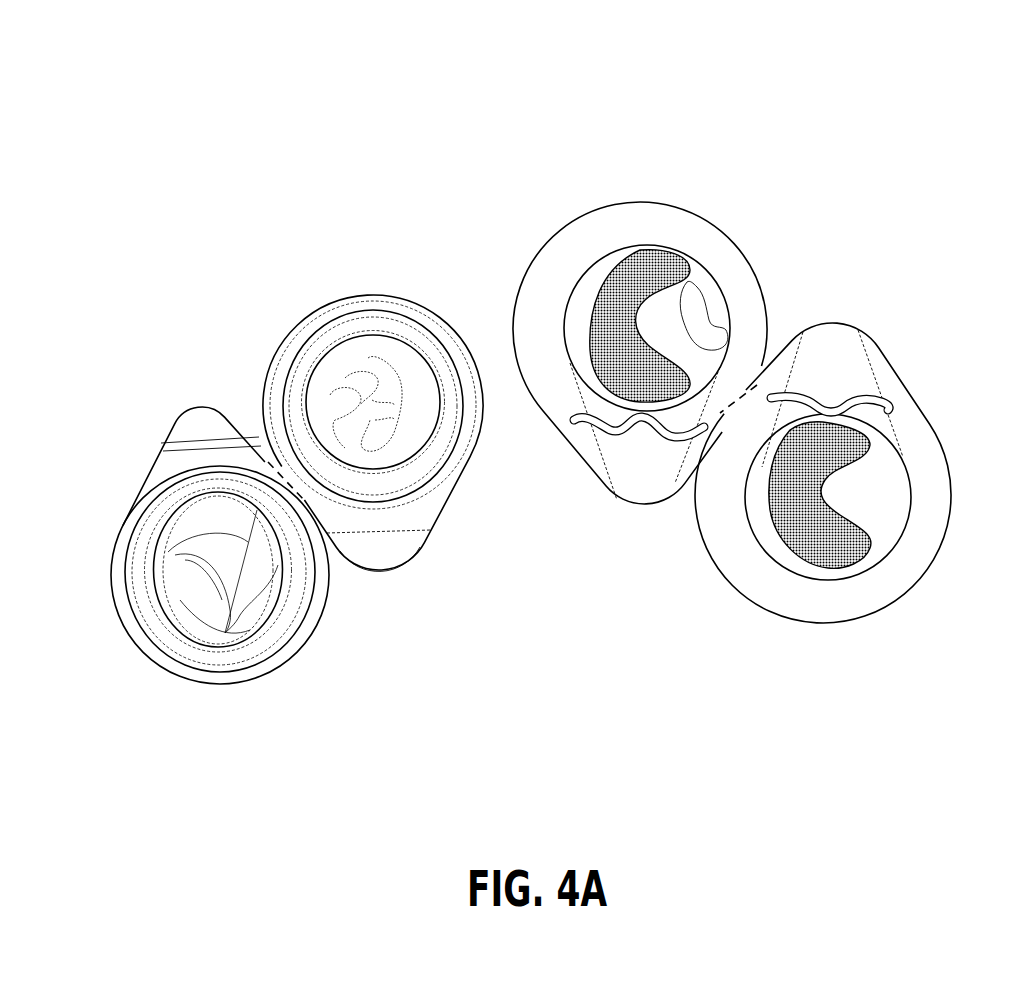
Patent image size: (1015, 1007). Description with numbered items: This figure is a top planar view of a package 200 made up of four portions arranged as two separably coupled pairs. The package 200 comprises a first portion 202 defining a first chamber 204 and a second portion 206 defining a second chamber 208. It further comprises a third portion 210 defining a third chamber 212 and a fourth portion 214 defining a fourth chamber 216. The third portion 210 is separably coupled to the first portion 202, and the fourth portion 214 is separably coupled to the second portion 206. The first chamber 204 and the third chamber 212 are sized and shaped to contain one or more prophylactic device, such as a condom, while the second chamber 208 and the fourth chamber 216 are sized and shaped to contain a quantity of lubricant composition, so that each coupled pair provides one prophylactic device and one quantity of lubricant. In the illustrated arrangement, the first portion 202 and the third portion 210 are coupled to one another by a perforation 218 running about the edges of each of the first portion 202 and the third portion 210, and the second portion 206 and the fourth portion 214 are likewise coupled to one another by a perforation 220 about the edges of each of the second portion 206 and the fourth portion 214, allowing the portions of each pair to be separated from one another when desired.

The package 200 is at (763, 123).
The first portion 202 is at (178, 428).
The first chamber 204 is at (176, 600).
The second portion 206 is at (930, 503).
The second chamber 208 is at (802, 530).
The third portion 210 is at (378, 558).
The third chamber 212 is at (357, 361).
The fourth portion 214 is at (720, 247).
The fourth chamber 216 is at (630, 266).
The perforation 218 is at (237, 388).
The perforation 220 is at (679, 515).